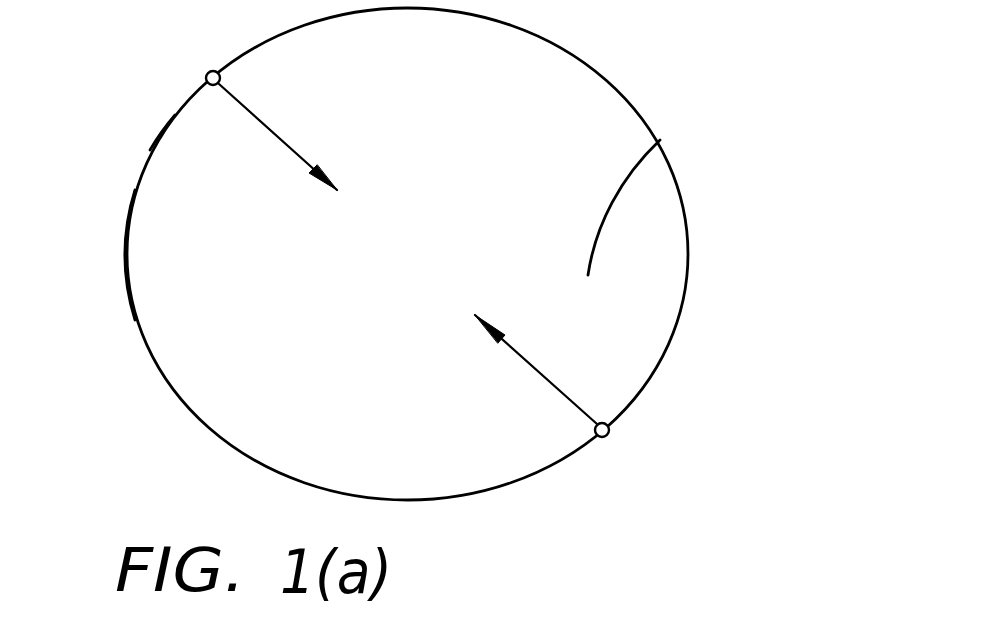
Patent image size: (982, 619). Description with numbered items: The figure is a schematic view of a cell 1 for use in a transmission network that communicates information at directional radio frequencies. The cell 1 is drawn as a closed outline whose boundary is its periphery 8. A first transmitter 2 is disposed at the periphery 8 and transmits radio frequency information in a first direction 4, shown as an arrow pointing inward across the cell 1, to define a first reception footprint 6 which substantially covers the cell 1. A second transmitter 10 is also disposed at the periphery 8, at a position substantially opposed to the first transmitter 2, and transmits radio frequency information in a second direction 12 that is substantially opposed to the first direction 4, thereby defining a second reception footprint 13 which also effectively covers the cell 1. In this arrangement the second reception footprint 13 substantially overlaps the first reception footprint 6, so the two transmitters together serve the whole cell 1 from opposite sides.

The cell 1 is at (698, 108).
The first transmitter 2 is at (207, 78).
The first direction 4 is at (263, 125).
The first reception footprint 6 is at (147, 248).
The periphery 8 is at (158, 140).
The second transmitter 10 is at (602, 437).
The second direction 12 is at (557, 383).
The second reception footprint 13 is at (655, 210).